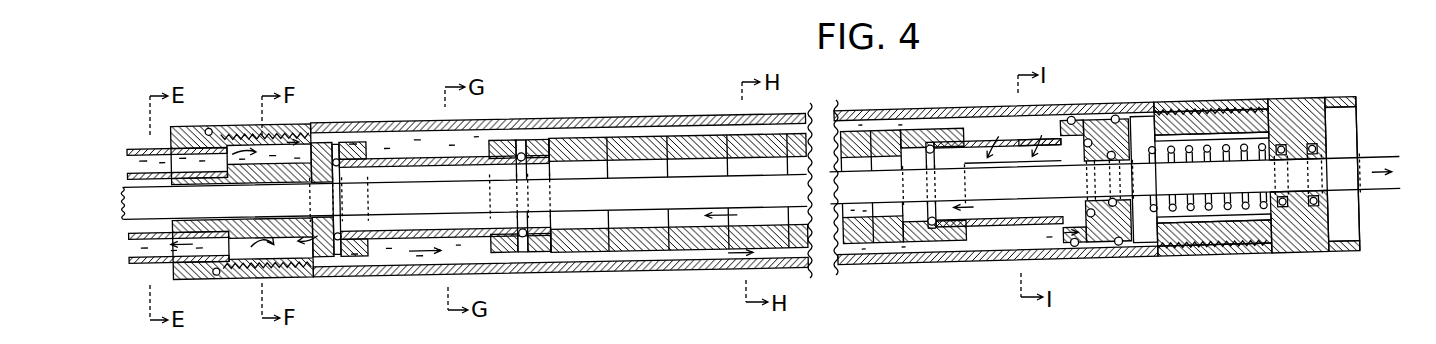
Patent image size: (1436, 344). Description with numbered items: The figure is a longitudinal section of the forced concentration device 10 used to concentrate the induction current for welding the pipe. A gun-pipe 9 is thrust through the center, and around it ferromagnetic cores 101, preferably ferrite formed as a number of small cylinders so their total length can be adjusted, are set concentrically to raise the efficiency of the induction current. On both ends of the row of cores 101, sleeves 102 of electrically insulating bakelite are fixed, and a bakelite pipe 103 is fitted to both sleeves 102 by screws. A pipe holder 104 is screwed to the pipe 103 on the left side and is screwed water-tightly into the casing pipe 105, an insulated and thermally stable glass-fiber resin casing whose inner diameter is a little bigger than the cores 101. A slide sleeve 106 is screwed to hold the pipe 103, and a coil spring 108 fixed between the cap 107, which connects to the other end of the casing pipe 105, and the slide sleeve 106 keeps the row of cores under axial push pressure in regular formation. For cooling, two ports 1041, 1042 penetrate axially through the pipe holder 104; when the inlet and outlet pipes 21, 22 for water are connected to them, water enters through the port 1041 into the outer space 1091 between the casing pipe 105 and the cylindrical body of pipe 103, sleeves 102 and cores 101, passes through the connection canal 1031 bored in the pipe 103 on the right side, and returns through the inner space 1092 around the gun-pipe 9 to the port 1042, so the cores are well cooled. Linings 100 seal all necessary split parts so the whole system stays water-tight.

The gun-pipe 9 is at (124, 186).
The forced concentration device 10 is at (1280, 92).
The inlet pipe 21 is at (168, 148).
The outlet pipe 22 is at (163, 256).
The linings 100 is at (345, 257).
The ferromagnetic cores 101 is at (590, 137).
The sleeves 102 is at (502, 142).
The pipe 103 is at (405, 240).
The pipe holder 104 is at (190, 128).
The casing pipe 105 is at (668, 267).
The slide sleeve 106 is at (1100, 127).
The cap 107 is at (1247, 130).
The coil spring 108 is at (1240, 215).
The connection canal 1031 is at (1023, 143).
The port 1041 is at (287, 148).
The port 1042 is at (257, 247).
The outer space 1091 is at (411, 145).
The inner space 1092 is at (470, 227).